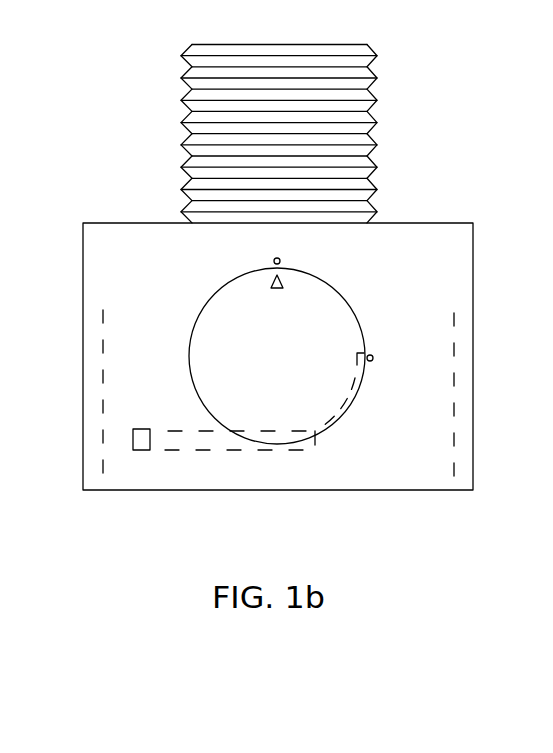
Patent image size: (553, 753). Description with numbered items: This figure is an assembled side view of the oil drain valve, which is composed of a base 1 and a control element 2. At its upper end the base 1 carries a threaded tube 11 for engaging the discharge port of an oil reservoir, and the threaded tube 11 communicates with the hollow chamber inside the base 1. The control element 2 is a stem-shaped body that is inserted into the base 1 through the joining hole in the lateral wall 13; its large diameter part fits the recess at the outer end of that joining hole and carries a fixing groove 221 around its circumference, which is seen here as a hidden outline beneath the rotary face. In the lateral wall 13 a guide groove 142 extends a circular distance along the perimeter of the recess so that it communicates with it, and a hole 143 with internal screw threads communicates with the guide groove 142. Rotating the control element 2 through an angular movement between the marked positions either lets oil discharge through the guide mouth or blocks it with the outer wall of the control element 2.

The base 1 is at (167, 197).
The threaded tube 11 is at (375, 112).
The lateral wall 13 is at (115, 270).
The control element 2 is at (312, 413).
The fixing groove 221 is at (340, 412).
The guide groove 142 is at (213, 437).
The hole 143 is at (132, 433).